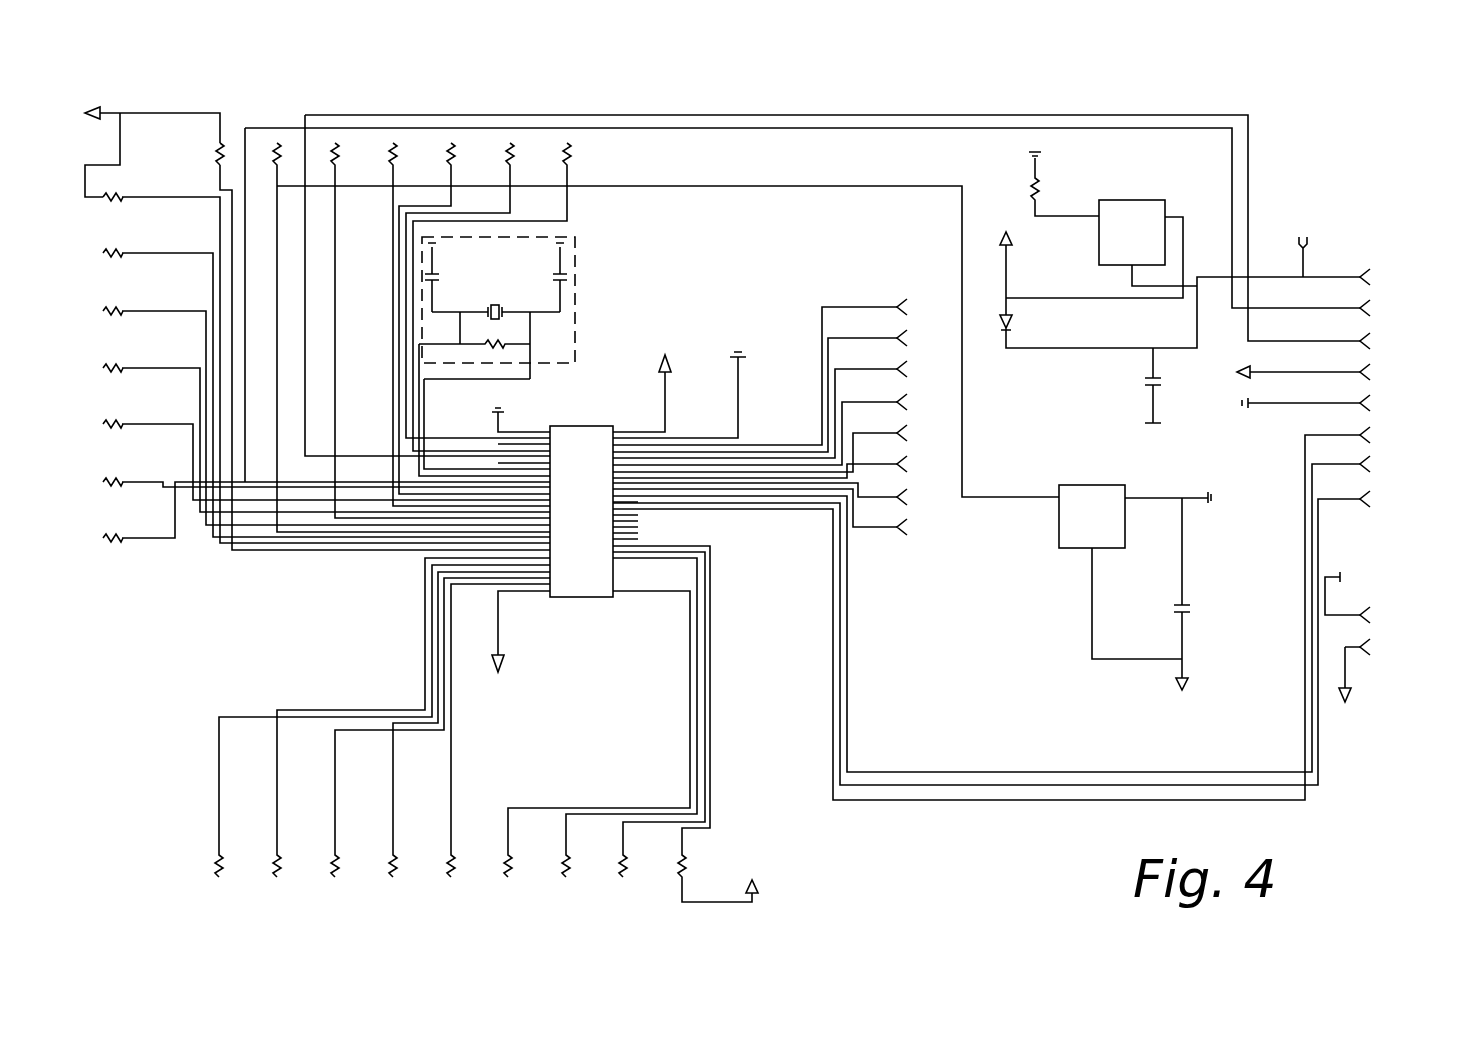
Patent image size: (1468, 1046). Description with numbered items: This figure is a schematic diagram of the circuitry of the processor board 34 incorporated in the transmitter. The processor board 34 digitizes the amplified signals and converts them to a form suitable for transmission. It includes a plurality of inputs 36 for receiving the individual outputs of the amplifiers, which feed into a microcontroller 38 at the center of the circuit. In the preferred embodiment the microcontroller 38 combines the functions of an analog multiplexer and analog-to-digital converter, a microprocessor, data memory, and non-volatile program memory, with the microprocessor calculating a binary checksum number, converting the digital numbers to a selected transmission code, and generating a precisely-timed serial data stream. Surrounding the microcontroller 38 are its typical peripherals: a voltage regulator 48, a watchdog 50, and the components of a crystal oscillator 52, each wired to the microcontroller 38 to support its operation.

The processor board 34 is at (763, 471).
The inputs 36 is at (1347, 308).
The microcontroller 38 is at (582, 552).
The voltage regulator 48 is at (1117, 226).
The watchdog 50 is at (1070, 517).
The crystal oscillator 52 is at (583, 275).